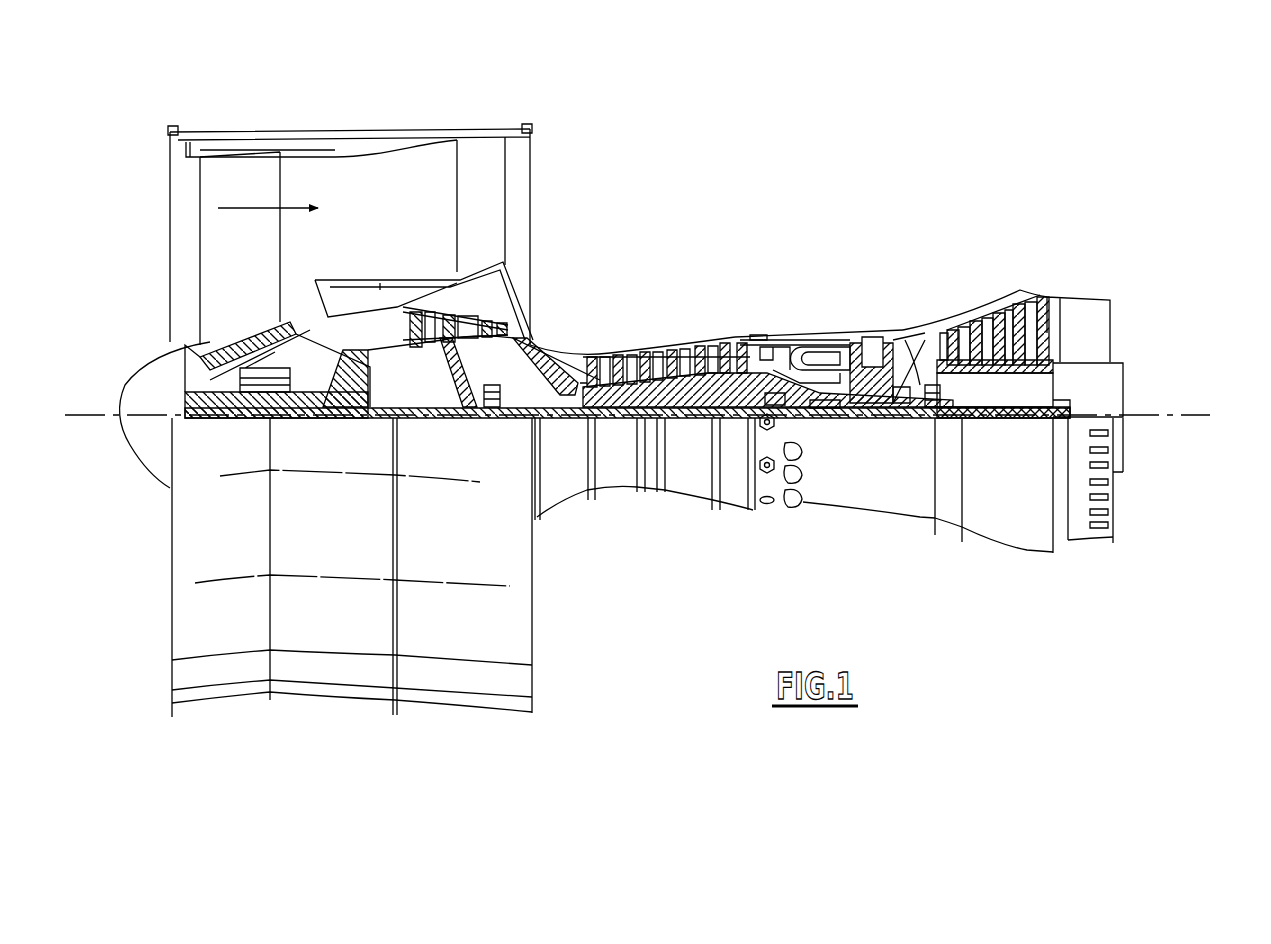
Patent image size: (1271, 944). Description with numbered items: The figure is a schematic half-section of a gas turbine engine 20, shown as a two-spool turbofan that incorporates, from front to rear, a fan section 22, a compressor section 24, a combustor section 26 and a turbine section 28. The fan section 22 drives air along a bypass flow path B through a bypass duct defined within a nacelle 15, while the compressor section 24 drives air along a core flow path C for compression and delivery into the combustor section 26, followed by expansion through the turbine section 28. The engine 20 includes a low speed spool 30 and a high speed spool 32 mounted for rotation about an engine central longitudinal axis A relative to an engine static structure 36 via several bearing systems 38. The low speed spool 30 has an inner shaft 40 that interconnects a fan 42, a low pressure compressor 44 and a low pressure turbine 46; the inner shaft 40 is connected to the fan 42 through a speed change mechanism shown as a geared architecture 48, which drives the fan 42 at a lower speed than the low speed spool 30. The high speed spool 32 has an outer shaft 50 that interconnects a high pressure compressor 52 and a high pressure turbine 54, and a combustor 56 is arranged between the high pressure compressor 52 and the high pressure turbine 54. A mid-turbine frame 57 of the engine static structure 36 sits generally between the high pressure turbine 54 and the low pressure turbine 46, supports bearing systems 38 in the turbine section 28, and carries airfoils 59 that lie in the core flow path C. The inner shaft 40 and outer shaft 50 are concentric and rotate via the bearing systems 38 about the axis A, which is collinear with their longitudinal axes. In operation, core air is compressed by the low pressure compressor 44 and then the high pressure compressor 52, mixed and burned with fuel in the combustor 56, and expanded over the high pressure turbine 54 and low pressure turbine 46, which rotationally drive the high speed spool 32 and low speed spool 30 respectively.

The nacelle 15 is at (352, 140).
The gas turbine engine 20 is at (812, 184).
The fan section 22 is at (283, 124).
The compressor section 24 is at (581, 325).
The combustor section 26 is at (805, 310).
The turbine section 28 is at (953, 278).
The low speed spool 30 is at (686, 422).
The high speed spool 32 is at (738, 360).
The engine static structure 36 is at (731, 512).
The bearing systems 38 is at (490, 410).
The inner shaft 40 is at (548, 418).
The fan 42 is at (223, 261).
The low pressure compressor 44 is at (460, 330).
The low pressure turbine 46 is at (1000, 300).
The geared architecture 48 is at (357, 398).
The outer shaft 50 is at (826, 397).
The high pressure compressor 52 is at (662, 388).
The high pressure turbine 54 is at (876, 335).
The combustor 56 is at (800, 360).
The mid-turbine frame 57 is at (920, 320).
The airfoils 59 is at (938, 360).
The engine central longitudinal axis A is at (1200, 415).
The bypass flow path B is at (250, 205).
The core flow path C is at (357, 316).